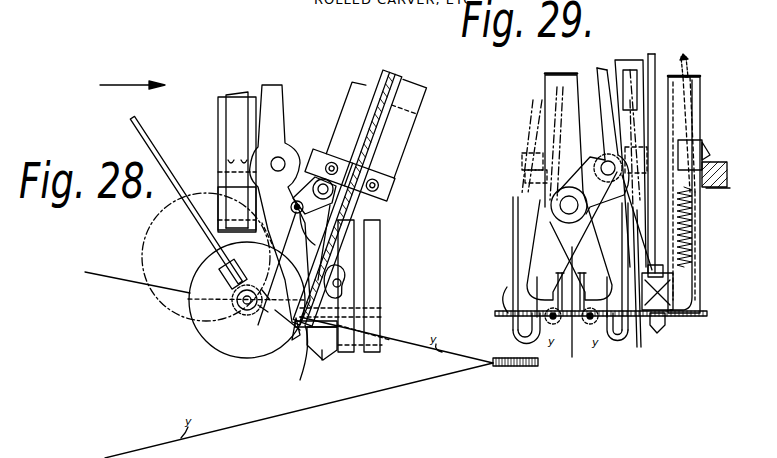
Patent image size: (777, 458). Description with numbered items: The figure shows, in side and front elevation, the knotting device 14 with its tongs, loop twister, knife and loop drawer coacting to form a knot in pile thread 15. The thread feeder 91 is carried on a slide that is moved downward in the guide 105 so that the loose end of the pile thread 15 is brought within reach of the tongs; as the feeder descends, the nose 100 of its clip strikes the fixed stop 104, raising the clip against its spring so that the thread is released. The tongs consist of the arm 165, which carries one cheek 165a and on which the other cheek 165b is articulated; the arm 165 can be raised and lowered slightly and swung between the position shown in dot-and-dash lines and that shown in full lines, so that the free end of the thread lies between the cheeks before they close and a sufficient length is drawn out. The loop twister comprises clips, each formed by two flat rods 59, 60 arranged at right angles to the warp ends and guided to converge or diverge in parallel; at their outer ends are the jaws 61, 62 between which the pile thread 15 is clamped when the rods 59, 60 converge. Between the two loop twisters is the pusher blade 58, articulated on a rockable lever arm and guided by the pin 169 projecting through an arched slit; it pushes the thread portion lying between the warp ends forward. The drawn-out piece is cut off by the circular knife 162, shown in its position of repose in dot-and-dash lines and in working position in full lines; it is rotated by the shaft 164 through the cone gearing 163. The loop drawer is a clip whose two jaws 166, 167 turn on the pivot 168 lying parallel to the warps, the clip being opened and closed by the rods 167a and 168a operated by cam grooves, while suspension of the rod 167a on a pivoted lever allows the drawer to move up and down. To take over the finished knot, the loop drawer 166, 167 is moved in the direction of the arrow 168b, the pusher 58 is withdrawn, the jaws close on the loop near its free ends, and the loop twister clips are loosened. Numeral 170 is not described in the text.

In FIG. 28, the knotting device 14 is at (297, 246).
In FIG. 28, the pile thread 15 is at (393, 69).
In FIG. 29, the pile thread 15 is at (689, 62).
In FIG. 28, the pusher blade 58 is at (323, 358).
In FIG. 29, the pusher blade 58 is at (573, 313).
In FIG. 28, the flat rod 59 is at (341, 286).
In FIG. 29, the flat rod 59 is at (513, 210).
In FIG. 28, the flat rod 60 is at (364, 286).
In FIG. 29, the flat rod 60 is at (620, 345).
In FIG. 28, the jaw 61 is at (316, 318).
In FIG. 28, the jaw 62 is at (322, 343).
In FIG. 28, the thread feeder 91 is at (348, 214).
In FIG. 29, the thread feeder 91 is at (701, 92).
In FIG. 29, the nose 100 is at (710, 146).
In FIG. 28, the fixed stop 104 is at (380, 190).
In FIG. 29, the fixed stop 104 is at (720, 189).
In FIG. 28, the guide 105 is at (392, 146).
In FIG. 28, the circular knife 162 is at (167, 300).
In FIG. 29, the circular knife 162 is at (640, 346).
In FIG. 28, the cone gearing 163 is at (206, 300).
In FIG. 29, the cone gearing 163 is at (667, 318).
In FIG. 28, the shaft 164 is at (160, 165).
In FIG. 29, the shaft 164 is at (660, 155).
In FIG. 28, the arm 165 is at (278, 129).
In FIG. 29, the arm 165 is at (633, 155).
In FIG. 28, the cheek 165a is at (305, 369).
In FIG. 29, the cheek 165a is at (512, 316).
In FIG. 28, the cheek 165b is at (293, 334).
In FIG. 28, the jaw 166 is at (277, 309).
In FIG. 29, the jaw 166 is at (572, 244).
In FIG. 28, the jaw 167 is at (287, 320).
In FIG. 29, the jaw 167 is at (581, 254).
In FIG. 28, the rod 167a is at (225, 121).
In FIG. 29, the rod 167a is at (552, 131).
In FIG. 29, the pivot 168 is at (560, 195).
In FIG. 28, the rod 168a is at (240, 160).
In FIG. 29, the rod 168a is at (593, 130).
In FIG. 28, the arrow 168b is at (132, 79).
In FIG. 28, the pin 169 is at (340, 283).
In FIG. 28, the link 170 is at (345, 269).